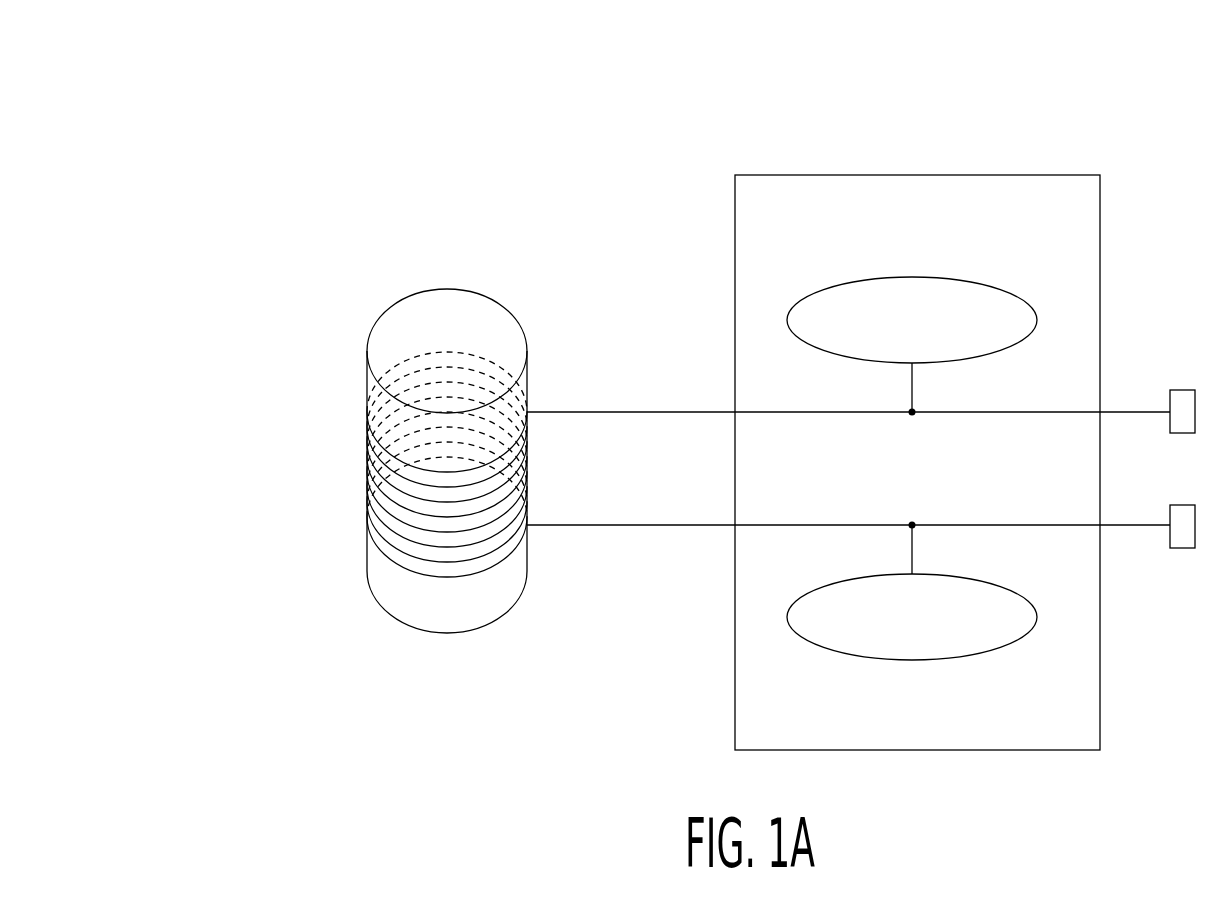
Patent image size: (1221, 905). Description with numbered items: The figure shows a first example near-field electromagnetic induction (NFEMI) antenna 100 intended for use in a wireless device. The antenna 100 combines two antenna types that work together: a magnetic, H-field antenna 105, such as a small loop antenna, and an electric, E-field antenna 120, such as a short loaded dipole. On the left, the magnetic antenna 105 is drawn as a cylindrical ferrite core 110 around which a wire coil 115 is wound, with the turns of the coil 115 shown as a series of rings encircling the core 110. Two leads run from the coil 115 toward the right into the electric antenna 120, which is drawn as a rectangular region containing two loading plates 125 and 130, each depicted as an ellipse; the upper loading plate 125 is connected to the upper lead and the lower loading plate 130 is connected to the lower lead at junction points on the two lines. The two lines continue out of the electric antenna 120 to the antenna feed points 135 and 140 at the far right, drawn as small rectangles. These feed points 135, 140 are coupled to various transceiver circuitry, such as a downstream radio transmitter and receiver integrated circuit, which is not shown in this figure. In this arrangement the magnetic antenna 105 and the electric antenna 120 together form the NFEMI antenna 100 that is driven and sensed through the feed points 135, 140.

The near-field electromagnetic induction antenna 100 is at (202, 100).
The magnetic antenna 105 is at (353, 238).
The ferrite core 110 is at (376, 311).
The wire coil 115 is at (367, 488).
The electric antenna 120 is at (1100, 197).
The loading plate 125 is at (1005, 291).
The loading plate 130 is at (994, 650).
The feed point 135 is at (1178, 390).
The feed point 140 is at (1178, 548).